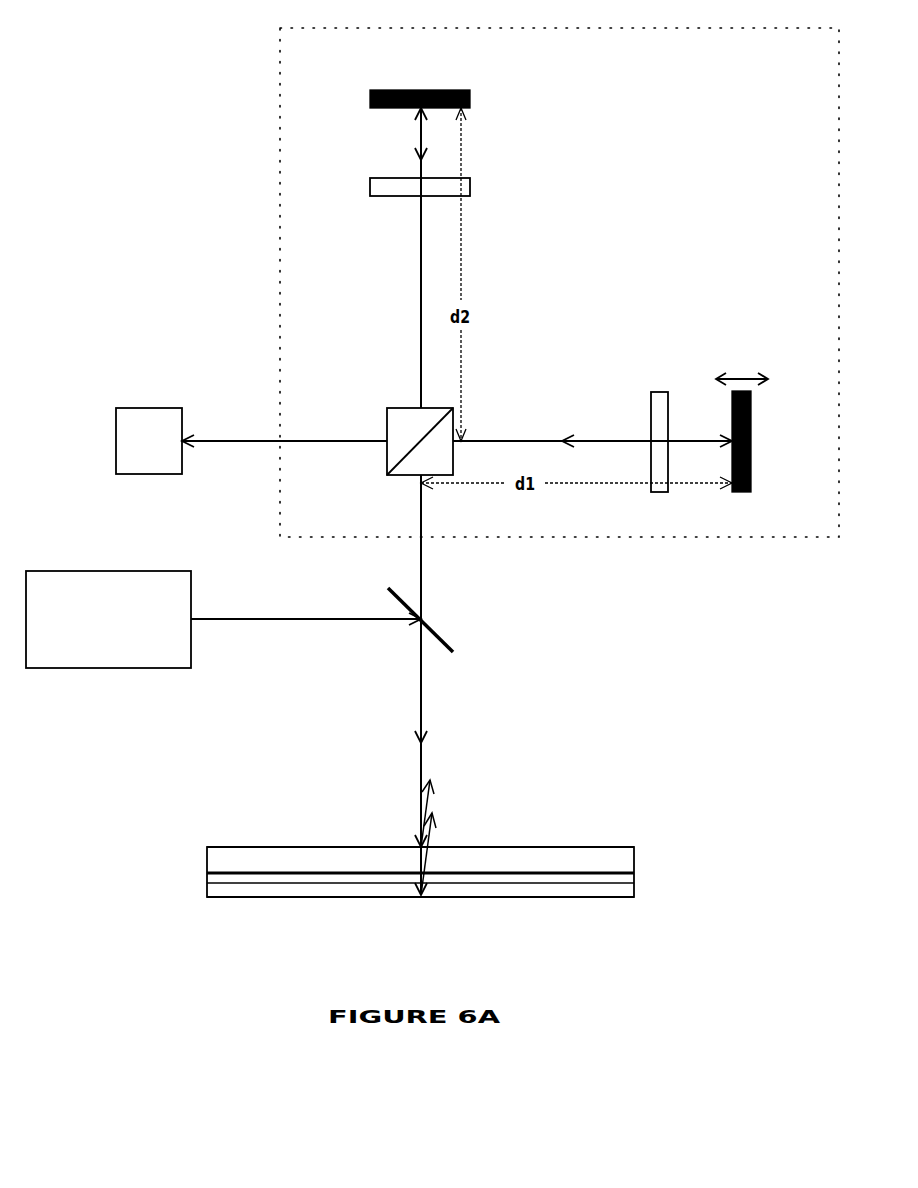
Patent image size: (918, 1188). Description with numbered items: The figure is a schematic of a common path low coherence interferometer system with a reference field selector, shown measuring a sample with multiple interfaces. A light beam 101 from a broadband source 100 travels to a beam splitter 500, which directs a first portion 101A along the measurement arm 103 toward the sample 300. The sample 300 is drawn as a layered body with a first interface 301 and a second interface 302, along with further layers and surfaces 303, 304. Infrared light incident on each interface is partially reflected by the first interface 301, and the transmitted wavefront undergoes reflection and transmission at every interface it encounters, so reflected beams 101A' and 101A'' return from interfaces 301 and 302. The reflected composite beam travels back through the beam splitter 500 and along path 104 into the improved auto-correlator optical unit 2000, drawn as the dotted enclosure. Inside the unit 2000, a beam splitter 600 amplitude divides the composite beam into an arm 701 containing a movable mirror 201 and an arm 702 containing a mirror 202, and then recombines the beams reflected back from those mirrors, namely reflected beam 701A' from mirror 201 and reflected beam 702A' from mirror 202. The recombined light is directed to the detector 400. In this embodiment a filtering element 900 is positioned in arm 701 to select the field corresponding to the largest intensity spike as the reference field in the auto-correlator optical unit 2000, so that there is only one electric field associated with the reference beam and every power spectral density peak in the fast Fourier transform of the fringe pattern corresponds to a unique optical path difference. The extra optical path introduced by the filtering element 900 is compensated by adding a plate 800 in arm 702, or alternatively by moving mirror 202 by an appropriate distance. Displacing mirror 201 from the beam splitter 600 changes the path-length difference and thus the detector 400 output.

The auto-correlator optical unit 2000 is at (280, 170).
The mirror 202 is at (462, 90).
The reflected beam 702A' is at (366, 130).
The plate 800 is at (470, 178).
The arm 702 is at (421, 320).
The beam splitter 600 is at (405, 408).
The arm 701 is at (503, 441).
The reflected beam 701A' is at (589, 404).
The filtering element 900 is at (658, 492).
The mirror 201 is at (751, 418).
The detector 400 is at (116, 436).
The beam 104 is at (421, 537).
The broadband source 100 is at (140, 571).
The light beam 101 is at (305, 619).
The beam splitter 500 is at (388, 588).
The measurement arm 103 is at (421, 675).
The first portion 101A is at (370, 794).
The reflected beam 101A' is at (482, 797).
The reflected beam 101A'' is at (485, 839).
The sample 300 is at (257, 858).
The interface 301 is at (390, 847).
The interface 302 is at (543, 873).
The bottom layer 303 is at (297, 883).
The bottom surface 304 is at (397, 897).